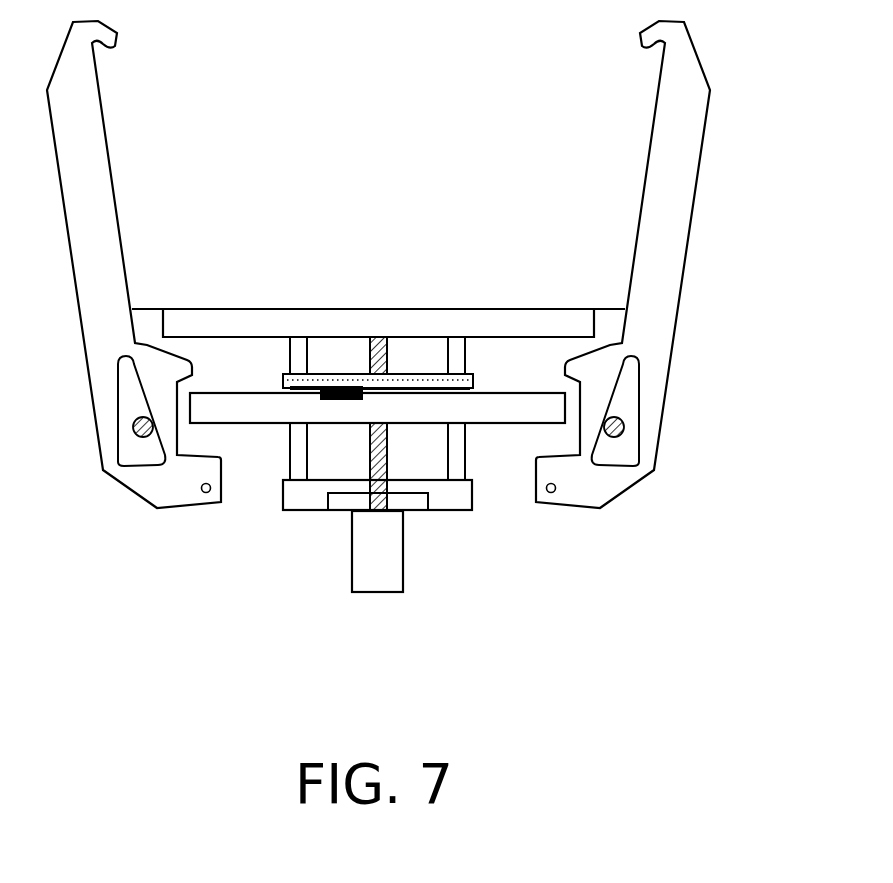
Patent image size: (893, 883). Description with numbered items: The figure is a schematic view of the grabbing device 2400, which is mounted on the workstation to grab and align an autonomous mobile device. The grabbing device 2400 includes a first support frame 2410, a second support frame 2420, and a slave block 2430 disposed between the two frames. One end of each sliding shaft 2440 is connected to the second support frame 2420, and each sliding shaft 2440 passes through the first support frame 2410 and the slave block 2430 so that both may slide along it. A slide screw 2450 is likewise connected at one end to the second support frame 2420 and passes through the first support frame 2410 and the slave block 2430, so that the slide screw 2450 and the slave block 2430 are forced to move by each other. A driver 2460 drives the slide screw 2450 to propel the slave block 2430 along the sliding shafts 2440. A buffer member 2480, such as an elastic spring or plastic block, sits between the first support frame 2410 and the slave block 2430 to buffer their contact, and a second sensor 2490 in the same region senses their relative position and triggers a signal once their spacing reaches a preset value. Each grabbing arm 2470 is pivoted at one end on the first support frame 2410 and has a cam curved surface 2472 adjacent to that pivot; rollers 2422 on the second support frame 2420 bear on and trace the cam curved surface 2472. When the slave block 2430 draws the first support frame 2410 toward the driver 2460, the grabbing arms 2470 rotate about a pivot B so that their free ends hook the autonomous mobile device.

The grabbing device 2400 is at (737, 718).
The first support frame 2410 is at (242, 412).
The second support frame 2420 is at (195, 314).
The roller 2422 is at (612, 440).
The slave block 2430 is at (287, 372).
The sliding shaft 2440 is at (457, 465).
The slide screw 2450 is at (378, 337).
The driver 2460 is at (385, 568).
The grabbing arm 2470 is at (90, 98).
The cam curved surface 2472 is at (644, 391).
The buffer member 2480 is at (465, 376).
The second sensor 2490 is at (333, 403).
The pivot B is at (552, 493).